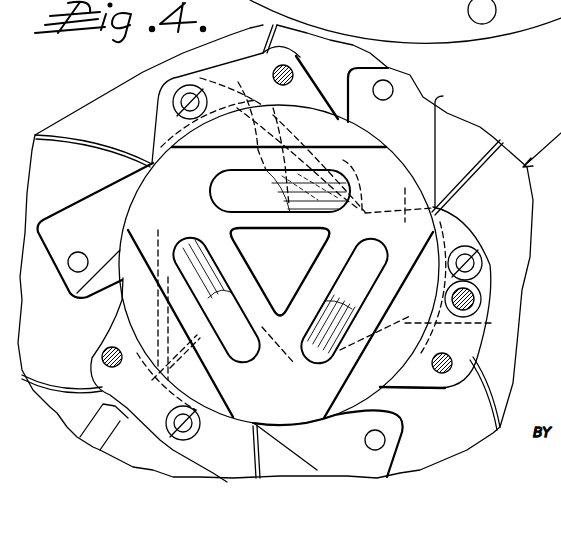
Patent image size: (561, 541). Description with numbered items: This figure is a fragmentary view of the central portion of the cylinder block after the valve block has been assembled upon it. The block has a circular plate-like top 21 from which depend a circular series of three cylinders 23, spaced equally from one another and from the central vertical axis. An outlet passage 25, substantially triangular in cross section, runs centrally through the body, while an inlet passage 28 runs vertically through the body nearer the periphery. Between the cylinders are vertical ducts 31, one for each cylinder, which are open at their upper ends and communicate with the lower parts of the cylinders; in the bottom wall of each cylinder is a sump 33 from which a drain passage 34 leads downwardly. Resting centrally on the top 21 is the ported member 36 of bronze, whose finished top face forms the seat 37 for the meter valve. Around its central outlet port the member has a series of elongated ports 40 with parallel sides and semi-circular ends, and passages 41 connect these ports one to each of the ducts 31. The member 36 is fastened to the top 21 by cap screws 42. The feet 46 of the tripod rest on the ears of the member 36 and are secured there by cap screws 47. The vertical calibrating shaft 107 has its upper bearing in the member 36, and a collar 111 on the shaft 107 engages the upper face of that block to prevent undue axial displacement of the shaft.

The circular plate-like top 21 is at (100, 106).
The cylinders 23 is at (482, 462).
The outlet passage 25 is at (280, 272).
The inlet passage 28 is at (122, 450).
The vertical ducts 31 is at (174, 194).
The sump 33 is at (240, 272).
The drain passage 34 is at (386, 89).
The ported member 36 is at (409, 177).
The seat 37 is at (387, 167).
The elongated ports 40 is at (280, 266).
The passages 41 is at (300, 136).
The cap screws 42 is at (173, 96).
The feet 46 is at (297, 62).
The cap screws 47 is at (294, 75).
The vertical shaft 107 is at (478, 308).
The collar 111 is at (479, 292).